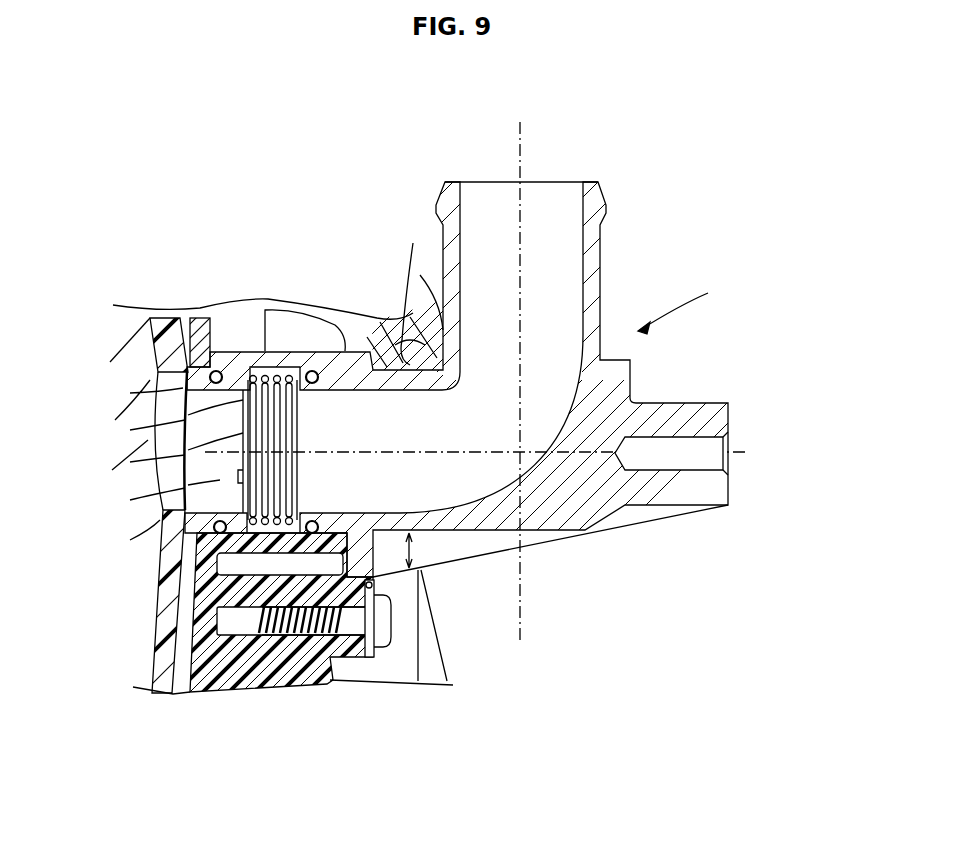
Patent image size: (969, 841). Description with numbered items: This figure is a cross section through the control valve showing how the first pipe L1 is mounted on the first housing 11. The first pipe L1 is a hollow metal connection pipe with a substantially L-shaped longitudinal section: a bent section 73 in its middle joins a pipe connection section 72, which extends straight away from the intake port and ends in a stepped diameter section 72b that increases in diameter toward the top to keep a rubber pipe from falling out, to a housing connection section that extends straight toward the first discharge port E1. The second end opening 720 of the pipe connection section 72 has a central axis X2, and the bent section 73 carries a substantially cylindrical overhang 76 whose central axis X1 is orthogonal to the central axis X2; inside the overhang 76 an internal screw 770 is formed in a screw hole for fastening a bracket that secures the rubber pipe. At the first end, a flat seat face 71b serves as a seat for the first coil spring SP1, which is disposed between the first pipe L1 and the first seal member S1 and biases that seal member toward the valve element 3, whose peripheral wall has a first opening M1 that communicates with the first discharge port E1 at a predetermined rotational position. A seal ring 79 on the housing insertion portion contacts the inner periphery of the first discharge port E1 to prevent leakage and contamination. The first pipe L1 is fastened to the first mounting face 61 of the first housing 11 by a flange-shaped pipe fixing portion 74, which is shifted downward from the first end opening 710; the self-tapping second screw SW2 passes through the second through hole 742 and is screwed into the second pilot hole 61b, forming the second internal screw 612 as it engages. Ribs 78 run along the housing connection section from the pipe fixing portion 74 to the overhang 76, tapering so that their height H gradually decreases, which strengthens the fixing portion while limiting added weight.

The second end opening 720 is at (488, 200).
The pipe connection section 72 is at (596, 285).
The stepped diameter section 72b is at (612, 215).
The overhang 76 is at (672, 412).
The internal screw 770 is at (730, 443).
The bent section 73 is at (537, 463).
The ribs 78 is at (497, 540).
The first mounting face 61 is at (355, 351).
The seat face 71b is at (282, 351).
The seal ring 79 is at (318, 351).
The first end opening 710 is at (275, 440).
The second internal screw 612 is at (280, 657).
The second pilot hole 61b is at (240, 627).
The second through hole 742 is at (378, 612).
The pipe fixing portion 74 is at (360, 657).
The first housing 11 is at (317, 667).
The valve element 3 is at (160, 643).
The first seal member S1 is at (216, 370).
The first coil spring SP1 is at (246, 403).
The first opening M1 is at (162, 391).
The first discharge port E1 is at (198, 482).
The height of rib H is at (413, 550).
The central axis of overhang X1 is at (637, 453).
The central axis of second end opening X2 is at (522, 162).
The first pipe L1 is at (687, 303).
The second screw SW2 is at (370, 630).